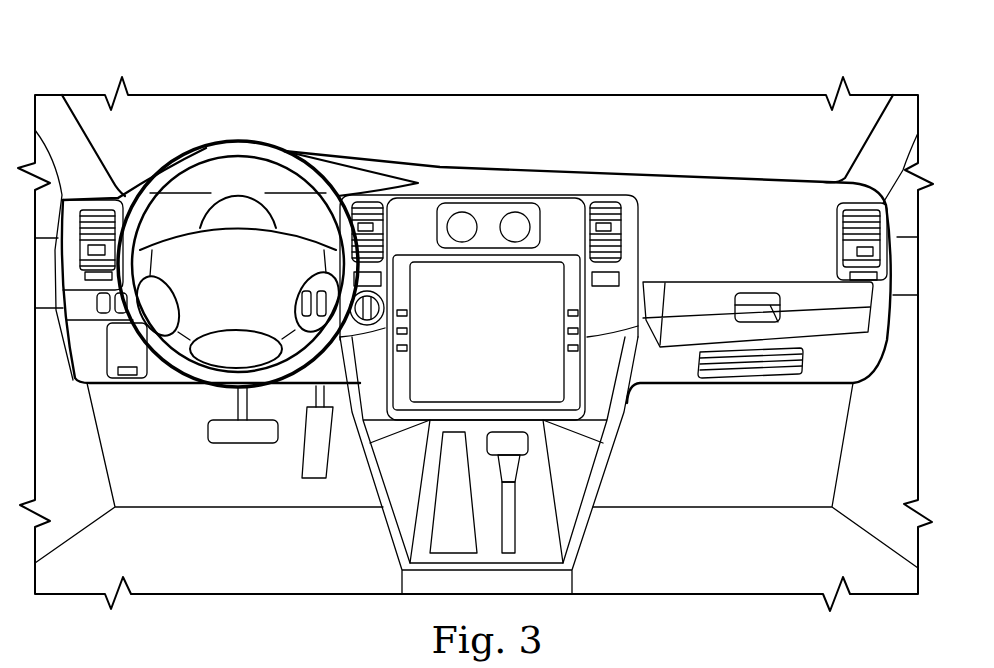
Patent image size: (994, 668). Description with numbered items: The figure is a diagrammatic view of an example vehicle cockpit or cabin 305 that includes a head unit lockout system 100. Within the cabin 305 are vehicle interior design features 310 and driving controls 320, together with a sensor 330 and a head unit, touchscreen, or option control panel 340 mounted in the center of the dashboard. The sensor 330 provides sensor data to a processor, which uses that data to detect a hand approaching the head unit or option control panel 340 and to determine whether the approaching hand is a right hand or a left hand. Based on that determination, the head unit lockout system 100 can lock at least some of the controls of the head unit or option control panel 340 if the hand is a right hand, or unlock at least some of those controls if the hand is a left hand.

The head unit lockout system 100 is at (367, 64).
The vehicle cockpit or cabin 305 is at (652, 62).
The vehicle interior design features 310 is at (718, 292).
The driving controls 320 is at (207, 430).
The sensor 330 is at (545, 222).
The head unit, touchscreen, or option control panel 340 is at (553, 383).